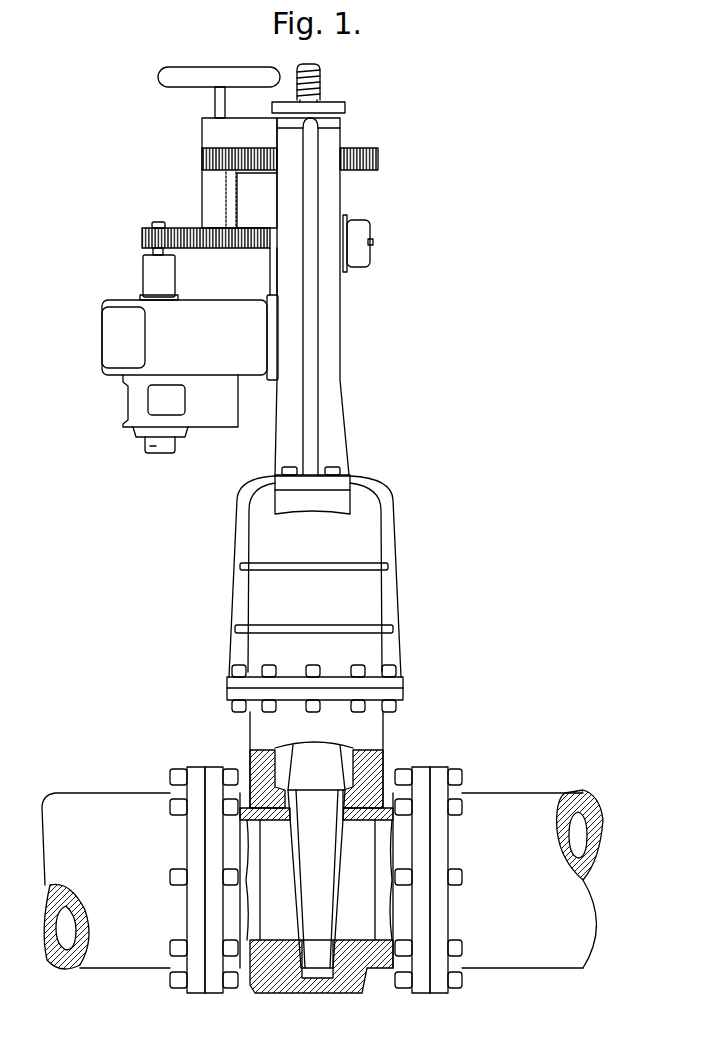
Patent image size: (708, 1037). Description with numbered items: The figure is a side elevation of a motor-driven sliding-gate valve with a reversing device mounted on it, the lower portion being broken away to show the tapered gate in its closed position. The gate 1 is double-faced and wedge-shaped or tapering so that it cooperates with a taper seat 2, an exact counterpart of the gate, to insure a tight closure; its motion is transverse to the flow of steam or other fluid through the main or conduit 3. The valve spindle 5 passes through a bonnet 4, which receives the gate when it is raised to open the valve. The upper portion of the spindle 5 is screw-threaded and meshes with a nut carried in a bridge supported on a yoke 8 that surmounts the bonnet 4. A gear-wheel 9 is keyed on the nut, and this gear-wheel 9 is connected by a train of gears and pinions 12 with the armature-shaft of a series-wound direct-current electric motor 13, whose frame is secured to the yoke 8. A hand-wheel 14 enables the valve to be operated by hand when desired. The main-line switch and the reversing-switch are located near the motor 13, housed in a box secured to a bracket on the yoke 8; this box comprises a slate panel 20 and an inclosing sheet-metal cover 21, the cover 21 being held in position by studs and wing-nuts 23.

The gate 1 is at (334, 855).
The taper seat 2 is at (316, 852).
The main or conduit 3 is at (322, 880).
The bonnet 4 is at (252, 598).
The spindle 5 is at (322, 88).
The yoke 8 is at (330, 343).
The gear-wheel 9 is at (378, 162).
The train of gears and pinions 12 is at (202, 157).
The electric motor 13 is at (190, 374).
The hand-wheel 14 is at (162, 79).
The slate panel 20 is at (346, 216).
The sheet-metal cover 21 is at (368, 266).
The wing-nuts 23 is at (373, 242).